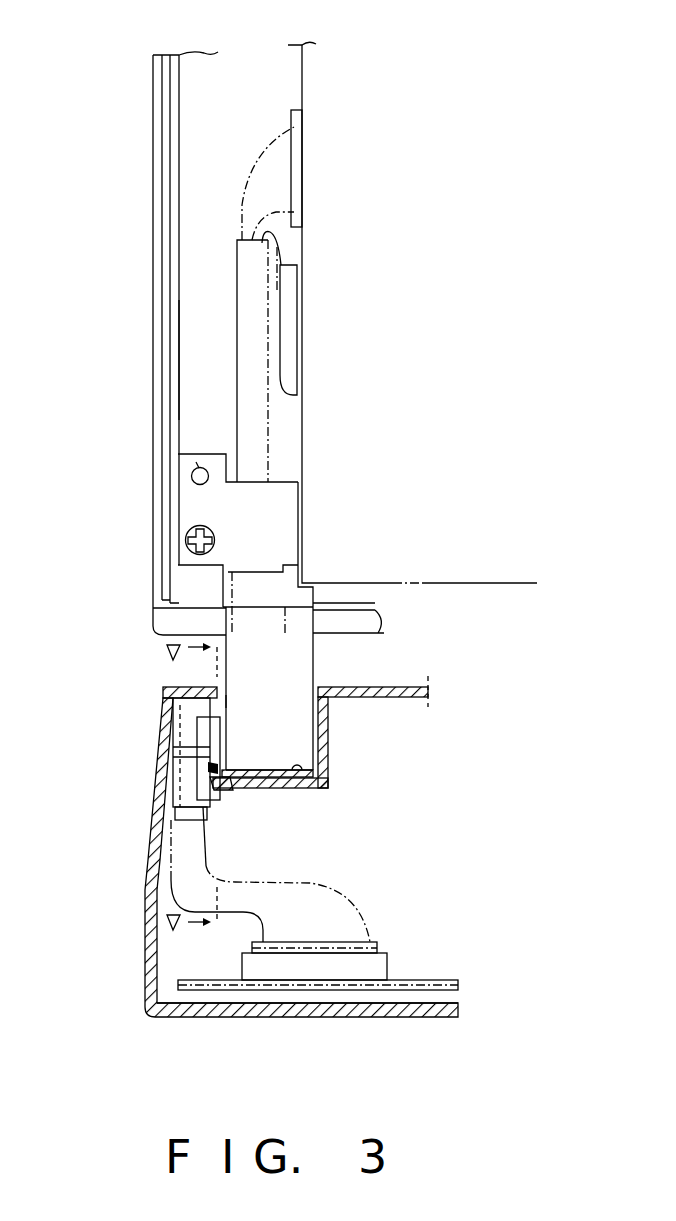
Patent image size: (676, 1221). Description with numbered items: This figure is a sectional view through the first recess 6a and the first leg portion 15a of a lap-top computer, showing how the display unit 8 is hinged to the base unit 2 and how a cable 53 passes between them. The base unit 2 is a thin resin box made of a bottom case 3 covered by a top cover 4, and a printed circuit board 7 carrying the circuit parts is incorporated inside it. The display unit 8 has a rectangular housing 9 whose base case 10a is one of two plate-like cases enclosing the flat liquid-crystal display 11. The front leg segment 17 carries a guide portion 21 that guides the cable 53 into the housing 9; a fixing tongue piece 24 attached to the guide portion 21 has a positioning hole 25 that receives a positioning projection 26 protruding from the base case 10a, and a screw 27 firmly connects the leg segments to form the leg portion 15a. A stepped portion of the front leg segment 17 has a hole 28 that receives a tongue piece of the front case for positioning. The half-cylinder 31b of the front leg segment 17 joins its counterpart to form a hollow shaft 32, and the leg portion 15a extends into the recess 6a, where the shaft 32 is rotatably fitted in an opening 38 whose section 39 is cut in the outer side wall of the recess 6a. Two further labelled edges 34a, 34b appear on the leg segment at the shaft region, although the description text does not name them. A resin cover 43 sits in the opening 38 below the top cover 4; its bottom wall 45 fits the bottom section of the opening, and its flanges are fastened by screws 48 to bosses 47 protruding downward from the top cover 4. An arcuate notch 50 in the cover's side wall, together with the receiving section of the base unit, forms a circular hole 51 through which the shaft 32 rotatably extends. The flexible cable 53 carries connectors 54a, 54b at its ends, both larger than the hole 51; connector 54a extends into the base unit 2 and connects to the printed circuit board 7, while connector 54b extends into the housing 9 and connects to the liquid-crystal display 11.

The base unit 2 is at (138, 953).
The bottom case 3 is at (407, 1010).
The top cover 4 is at (394, 692).
The first recess 6a is at (311, 788).
The printed circuit board 7 is at (420, 980).
The display unit 8 is at (151, 238).
The housing 9 is at (151, 97).
The base case 10a is at (190, 357).
The liquid-crystal display 11 is at (302, 77).
The first leg portion 15a is at (301, 720).
The front leg segment 17 is at (296, 647).
The guide portion 21 is at (277, 537).
The fixing tongue piece 24 is at (190, 505).
The positioning hole 25 is at (198, 466).
The positioning projection 26 is at (192, 479).
The screw 27 is at (186, 543).
The hole 28 is at (257, 603).
The half-cylinder 31b is at (226, 722).
The hollow shaft 32 is at (217, 727).
The upper guide edge 34a is at (227, 702).
The lower guide edge 34b is at (224, 752).
The opening 38 is at (254, 790).
The section 39 is at (177, 703).
The cover 43 is at (215, 790).
The bottom wall 45 is at (230, 795).
The boss 47 is at (175, 712).
The screw 48 is at (190, 820).
The arcuate notch 50 is at (207, 758).
The circular hole 51 is at (217, 767).
The cable 53 is at (263, 440).
The connector 54a is at (370, 943).
The connector 54b is at (302, 183).